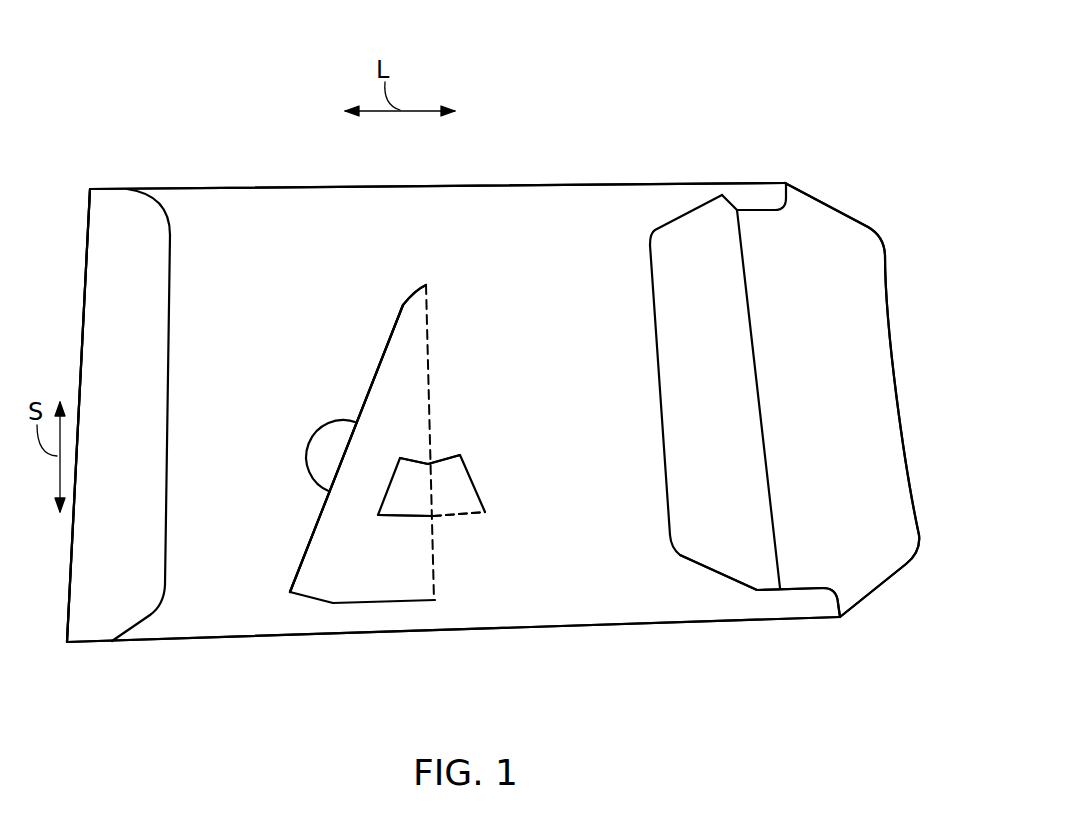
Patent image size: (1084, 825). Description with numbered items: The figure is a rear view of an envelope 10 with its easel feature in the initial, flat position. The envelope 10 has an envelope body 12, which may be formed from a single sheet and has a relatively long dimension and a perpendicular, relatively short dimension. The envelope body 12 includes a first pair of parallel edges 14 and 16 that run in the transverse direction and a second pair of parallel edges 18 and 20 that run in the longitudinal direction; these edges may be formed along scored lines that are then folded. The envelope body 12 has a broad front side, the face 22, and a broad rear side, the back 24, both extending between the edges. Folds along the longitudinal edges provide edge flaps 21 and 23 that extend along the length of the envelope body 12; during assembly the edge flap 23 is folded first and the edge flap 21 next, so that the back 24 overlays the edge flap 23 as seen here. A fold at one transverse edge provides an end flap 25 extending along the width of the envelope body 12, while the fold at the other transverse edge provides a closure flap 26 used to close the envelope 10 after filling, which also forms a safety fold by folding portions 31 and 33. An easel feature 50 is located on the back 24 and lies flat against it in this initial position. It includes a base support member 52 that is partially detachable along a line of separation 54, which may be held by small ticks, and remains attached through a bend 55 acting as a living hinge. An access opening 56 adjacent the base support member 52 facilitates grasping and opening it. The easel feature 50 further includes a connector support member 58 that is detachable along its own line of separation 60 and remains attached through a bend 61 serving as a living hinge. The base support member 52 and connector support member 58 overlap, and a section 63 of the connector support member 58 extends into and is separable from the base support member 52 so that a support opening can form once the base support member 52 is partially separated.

The envelope 10 is at (693, 77).
The envelope body 12 is at (637, 213).
The first parallel edge 14 is at (86, 265).
The second parallel edge 16 is at (760, 396).
The parallel edge 18 is at (255, 188).
The parallel edge 20 is at (480, 632).
The edge flap 21 is at (708, 607).
The face 22 is at (637, 632).
The edge flap 23 is at (715, 182).
The back 24 is at (560, 213).
The end flap 25 is at (90, 360).
The closure flap 26 is at (888, 357).
The portion 31 is at (777, 607).
The portion 33 is at (768, 190).
The easel feature 50 is at (480, 408).
The base support member 52 is at (395, 350).
The line of separation 54 is at (362, 395).
The bend 55 is at (434, 387).
The access opening 56 is at (318, 452).
The connector support member 58 is at (447, 500).
The line of separation 60 is at (388, 490).
The bend 61 is at (485, 512).
The section 63 is at (420, 465).